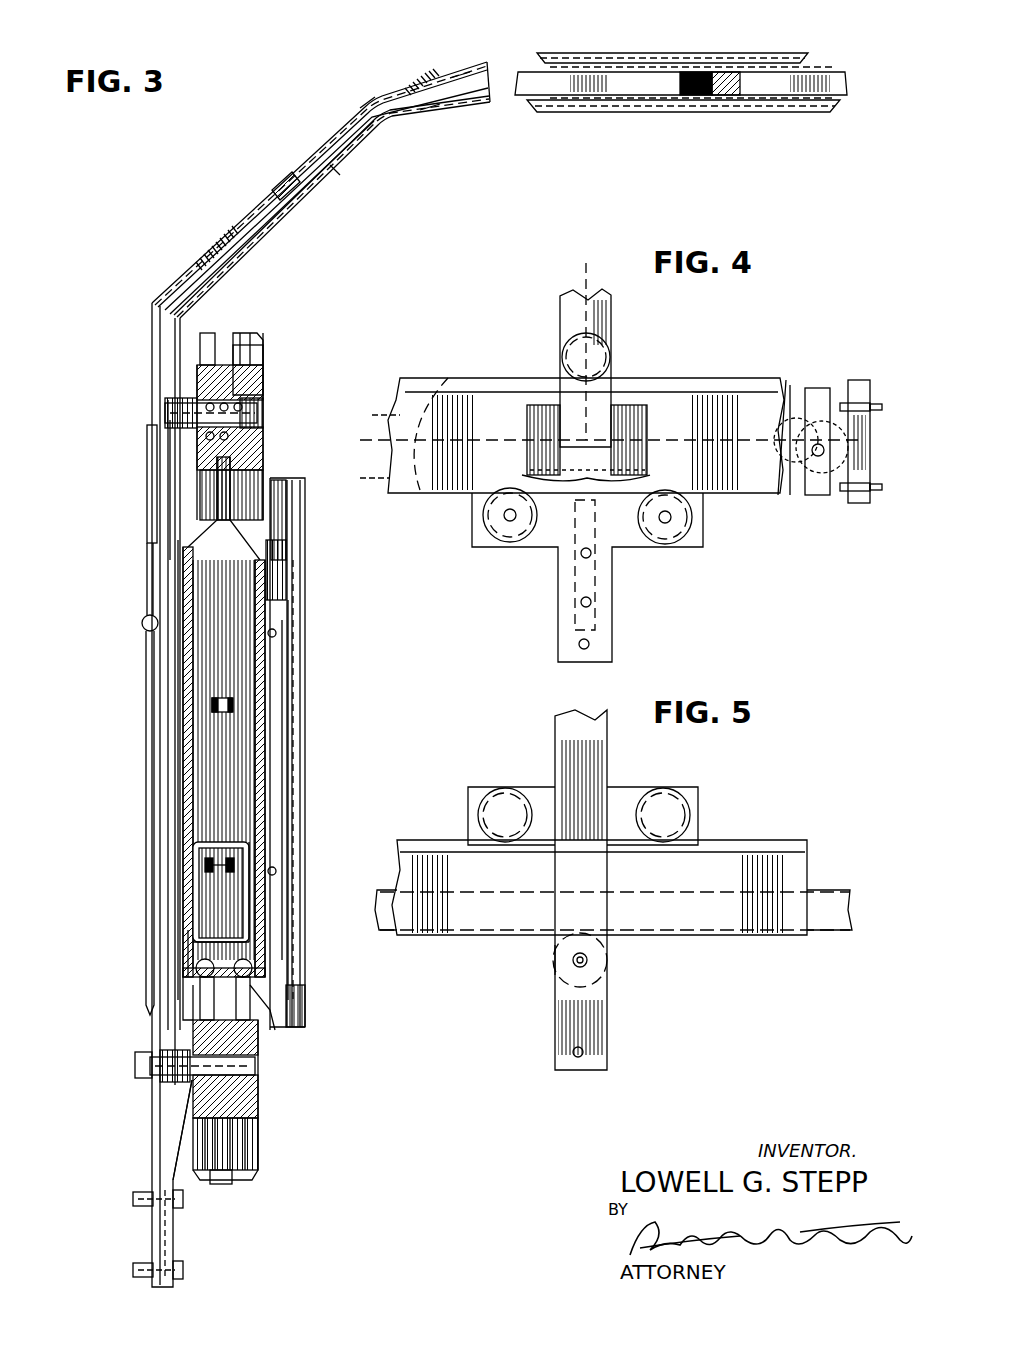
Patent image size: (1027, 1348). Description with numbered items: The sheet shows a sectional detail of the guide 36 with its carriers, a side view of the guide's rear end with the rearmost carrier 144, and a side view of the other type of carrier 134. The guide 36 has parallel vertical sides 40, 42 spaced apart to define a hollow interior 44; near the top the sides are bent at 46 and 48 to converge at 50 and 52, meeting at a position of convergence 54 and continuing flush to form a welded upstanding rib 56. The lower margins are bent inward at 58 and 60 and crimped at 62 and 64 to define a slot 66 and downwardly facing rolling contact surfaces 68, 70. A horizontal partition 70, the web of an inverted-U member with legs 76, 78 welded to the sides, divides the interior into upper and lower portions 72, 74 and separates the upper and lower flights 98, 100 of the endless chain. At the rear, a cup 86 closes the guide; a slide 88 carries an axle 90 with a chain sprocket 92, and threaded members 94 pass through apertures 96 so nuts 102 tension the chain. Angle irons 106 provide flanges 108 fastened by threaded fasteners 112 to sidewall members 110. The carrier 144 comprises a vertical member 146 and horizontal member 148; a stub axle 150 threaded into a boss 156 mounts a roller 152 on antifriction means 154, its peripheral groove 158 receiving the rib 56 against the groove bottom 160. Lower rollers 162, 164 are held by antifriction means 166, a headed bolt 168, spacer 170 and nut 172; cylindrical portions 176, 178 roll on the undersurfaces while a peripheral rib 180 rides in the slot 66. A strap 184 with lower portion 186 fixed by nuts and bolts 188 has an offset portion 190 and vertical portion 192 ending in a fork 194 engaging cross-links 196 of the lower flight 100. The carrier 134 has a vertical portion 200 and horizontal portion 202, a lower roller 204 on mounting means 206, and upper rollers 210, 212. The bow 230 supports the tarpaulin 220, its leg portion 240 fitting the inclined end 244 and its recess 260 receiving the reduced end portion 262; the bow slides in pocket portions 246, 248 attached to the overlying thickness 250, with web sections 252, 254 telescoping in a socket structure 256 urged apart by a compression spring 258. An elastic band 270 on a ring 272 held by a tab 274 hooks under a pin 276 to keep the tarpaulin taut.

In FIG. 3, the guide 36 is at (176, 690).
In FIG. 4, the guide 36 is at (712, 382).
In FIG. 5, the guide 36 is at (782, 852).
In FIG. 3, the side 40 is at (188, 728).
In FIG. 3, the side 42 is at (240, 705).
In FIG. 3, the hollow interior 44 is at (292, 590).
In FIG. 3, the bend 46 is at (176, 547).
In FIG. 3, the bend 48 is at (272, 546).
In FIG. 3, the converging portion 50 is at (176, 516).
In FIG. 3, the converging portion 52 is at (278, 522).
In FIG. 3, the position of convergence 54 is at (283, 583).
In FIG. 3, the upstanding rib 56 is at (283, 482).
In FIG. 3, the inwardly bent portion 58 is at (182, 983).
In FIG. 3, the inwardly bent portion 60 is at (291, 1005).
In FIG. 3, the crimped portion 62 is at (188, 938).
In FIG. 3, the crimped portion 64 is at (258, 977).
In FIG. 3, the slot 66 is at (262, 945).
In FIG. 3, the rolling contact surface 68 is at (192, 1012).
In FIG. 3, the partition 70 is at (262, 790).
In FIG. 4, the partition 70 is at (455, 386).
In FIG. 3, the upper portion 72 is at (205, 760).
In FIG. 3, the lower portion 74 is at (190, 875).
In FIG. 3, the leg 76 is at (178, 805).
In FIG. 3, the leg 78 is at (255, 962).
In FIG. 4, the cup 86 is at (868, 482).
In FIG. 4, the slide 88 is at (820, 382).
In FIG. 4, the axle 90 is at (838, 500).
In FIG. 4, the chain sprocket 92 is at (792, 496).
In FIG. 4, the threaded member 94 is at (838, 396).
In FIG. 4, the aperture 96 is at (862, 385).
In FIG. 3, the upper flight 98 is at (268, 749).
In FIG. 4, the upper flight 98 is at (548, 392).
In FIG. 3, the lower flight 100 is at (250, 858).
In FIG. 4, the lower flight 100 is at (390, 472).
In FIG. 4, the nut 102 is at (877, 434).
In FIG. 3, the angle iron 106 is at (289, 668).
In FIG. 3, the flange 108 is at (275, 722).
In FIG. 3, the member 110 is at (292, 985).
In FIG. 3, the threaded fastener 112 is at (277, 633).
In FIG. 5, the carrier 134 is at (600, 1016).
In FIG. 3, the carrier 144 is at (292, 351).
In FIG. 4, the carrier 144 is at (560, 320).
In FIG. 4, the vertical member 146 is at (614, 366).
In FIG. 4, the horizontal member 148 is at (475, 545).
In FIG. 3, the stub axle 150 is at (250, 420).
In FIG. 3, the roller 152 is at (245, 346).
In FIG. 4, the roller 152 is at (611, 348).
In FIG. 3, the antifriction means 154 is at (200, 380).
In FIG. 3, the internally threaded boss 156 is at (185, 406).
In FIG. 3, the peripheral groove 158 is at (224, 334).
In FIG. 3, the groove bottom 160 is at (240, 334).
In FIG. 4, the lower roller 162 is at (480, 512).
In FIG. 3, the lower roller 164 is at (255, 1128).
In FIG. 4, the lower roller 164 is at (703, 548).
In FIG. 3, the antifriction means 166 is at (254, 1100).
In FIG. 3, the headed bolt 168 is at (246, 1050).
In FIG. 3, the spacer 170 is at (140, 1062).
In FIG. 3, the nut 172 is at (150, 1045).
In FIG. 3, the cylindrical portion 176 is at (208, 1172).
In FIG. 3, the cylindrical portion 178 is at (240, 1160).
In FIG. 3, the peripheral rib 180 is at (222, 1180).
In FIG. 3, the strap 184 is at (140, 1200).
In FIG. 3, the lower portion 186 is at (173, 1250).
In FIG. 3, the nuts and bolts 188 is at (143, 1195).
In FIG. 3, the offset portion 190 is at (183, 1160).
In FIG. 3, the vertical portion 192 is at (250, 908).
In FIG. 3, the fork 194 is at (240, 822).
In FIG. 4, the fork 194 is at (556, 572).
In FIG. 3, the cross-links 196 is at (246, 842).
In FIG. 5, the vertical portion 200 is at (560, 724).
In FIG. 5, the horizontal portion 202 is at (699, 811).
In FIG. 5, the lower roller 204 is at (553, 960).
In FIG. 5, the mounting means 206 is at (590, 960).
In FIG. 5, the upper roller 210 is at (500, 795).
In FIG. 5, the upper roller 212 is at (662, 805).
In FIG. 3, the tarpaulin 220 is at (345, 122).
In FIG. 3, the bow 230 is at (782, 72).
In FIG. 3, the leg portion 240 is at (335, 176).
In FIG. 3, the inclined upper end 244 is at (252, 238).
In FIG. 3, the upper pocket portion 246 is at (462, 68).
In FIG. 3, the lower pocket portion 248 is at (426, 104).
In FIG. 3, the overlying tarpaulin thickness 250 is at (370, 96).
In FIG. 3, the web section 252 is at (515, 97).
In FIG. 3, the web section 254 is at (815, 113).
In FIG. 3, the socket structure 256 is at (648, 100).
In FIG. 3, the coiled compression spring 258 is at (705, 100).
In FIG. 3, the recess 260 is at (238, 214).
In FIG. 3, the reduced end portion 262 is at (278, 185).
In FIG. 3, the elastic band 270 is at (150, 662).
In FIG. 3, the ring 272 is at (150, 592).
In FIG. 3, the tab 274 is at (148, 445).
In FIG. 4, the pin 276 is at (590, 646).
In FIG. 5, the pin 276 is at (586, 1052).